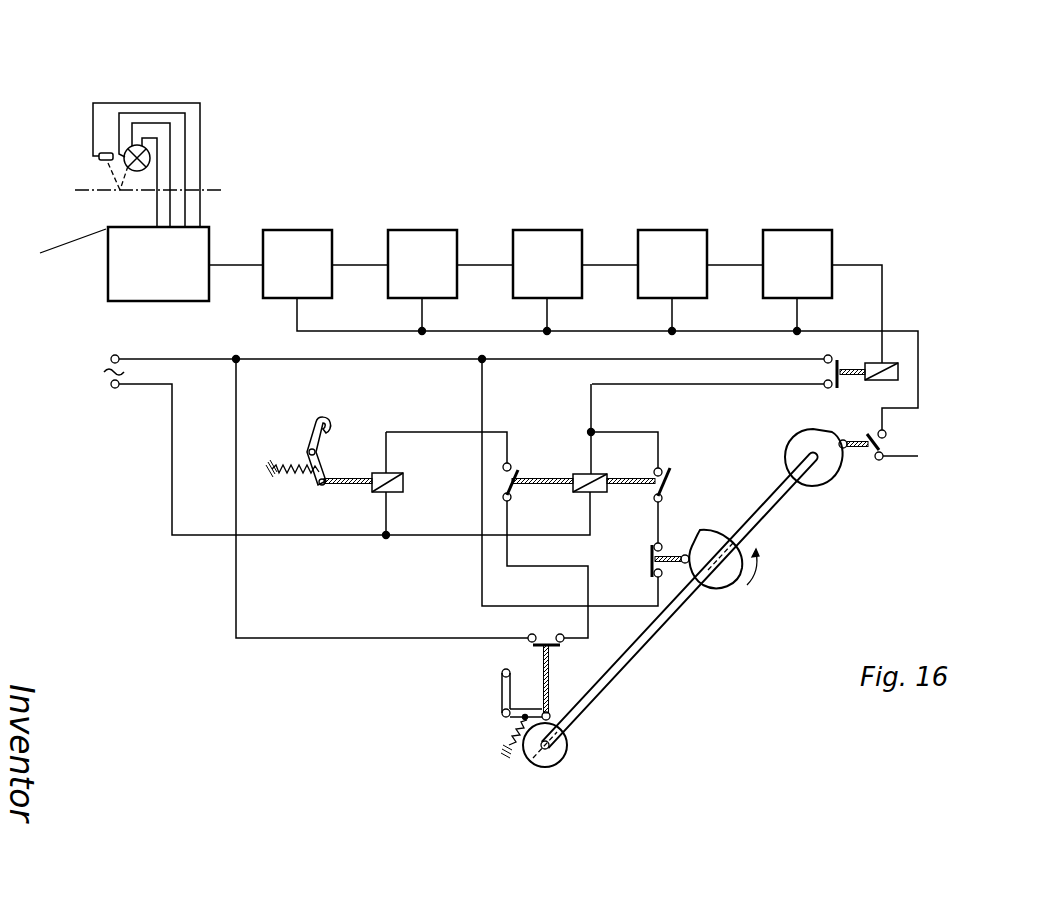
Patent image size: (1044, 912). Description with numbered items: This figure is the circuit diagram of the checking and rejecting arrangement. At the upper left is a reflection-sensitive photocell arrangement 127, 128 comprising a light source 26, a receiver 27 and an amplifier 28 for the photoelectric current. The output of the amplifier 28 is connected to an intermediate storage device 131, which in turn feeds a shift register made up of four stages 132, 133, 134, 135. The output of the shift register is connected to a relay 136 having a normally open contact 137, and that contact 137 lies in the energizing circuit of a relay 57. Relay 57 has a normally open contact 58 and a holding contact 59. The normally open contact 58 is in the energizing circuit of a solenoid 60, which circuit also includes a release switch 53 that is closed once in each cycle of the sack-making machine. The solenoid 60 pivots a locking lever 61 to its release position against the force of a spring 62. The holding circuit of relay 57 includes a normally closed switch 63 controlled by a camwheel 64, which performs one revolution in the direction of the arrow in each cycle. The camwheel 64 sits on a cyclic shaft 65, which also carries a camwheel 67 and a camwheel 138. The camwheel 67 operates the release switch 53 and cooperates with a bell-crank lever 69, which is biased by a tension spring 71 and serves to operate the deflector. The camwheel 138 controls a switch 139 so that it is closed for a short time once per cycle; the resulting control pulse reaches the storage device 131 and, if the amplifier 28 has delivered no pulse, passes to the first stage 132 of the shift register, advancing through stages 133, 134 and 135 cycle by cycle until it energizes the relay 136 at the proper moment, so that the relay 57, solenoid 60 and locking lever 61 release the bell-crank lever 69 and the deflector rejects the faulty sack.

The light source 26 is at (127, 171).
The receiver 27 is at (99, 157).
The amplifier 28 is at (118, 279).
The reflection-sensitive photocell arrangement 127 is at (108, 228).
The reflection-sensitive photocell arrangement 128 is at (53, 264).
The intermediate storage device 131 is at (295, 243).
The first shift register stage 132 is at (423, 241).
The shift register stage 133 is at (548, 242).
The shift register stage 134 is at (675, 242).
The shift register stage 135 is at (802, 245).
The relay 136 is at (895, 372).
The normally open contact 137 is at (841, 383).
The camwheel 138 is at (807, 440).
The switch 139 is at (882, 446).
The release switch 53 is at (560, 647).
The relay 57 is at (587, 472).
The normally open contact 58 is at (512, 482).
The holding contact 59 is at (673, 475).
The solenoid 60 is at (400, 488).
The locking lever 61 is at (313, 425).
The spring 62 is at (293, 477).
The normally closed switch 63 is at (652, 555).
The camwheel 64 is at (728, 572).
The cyclic shaft 65 is at (648, 632).
The camwheel 67 is at (558, 753).
The bell-crank lever 69 is at (505, 688).
The tension spring 71 is at (508, 737).